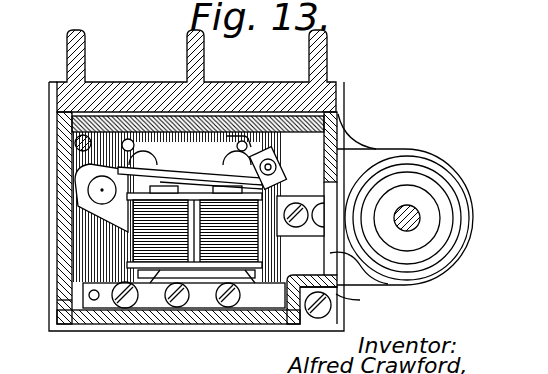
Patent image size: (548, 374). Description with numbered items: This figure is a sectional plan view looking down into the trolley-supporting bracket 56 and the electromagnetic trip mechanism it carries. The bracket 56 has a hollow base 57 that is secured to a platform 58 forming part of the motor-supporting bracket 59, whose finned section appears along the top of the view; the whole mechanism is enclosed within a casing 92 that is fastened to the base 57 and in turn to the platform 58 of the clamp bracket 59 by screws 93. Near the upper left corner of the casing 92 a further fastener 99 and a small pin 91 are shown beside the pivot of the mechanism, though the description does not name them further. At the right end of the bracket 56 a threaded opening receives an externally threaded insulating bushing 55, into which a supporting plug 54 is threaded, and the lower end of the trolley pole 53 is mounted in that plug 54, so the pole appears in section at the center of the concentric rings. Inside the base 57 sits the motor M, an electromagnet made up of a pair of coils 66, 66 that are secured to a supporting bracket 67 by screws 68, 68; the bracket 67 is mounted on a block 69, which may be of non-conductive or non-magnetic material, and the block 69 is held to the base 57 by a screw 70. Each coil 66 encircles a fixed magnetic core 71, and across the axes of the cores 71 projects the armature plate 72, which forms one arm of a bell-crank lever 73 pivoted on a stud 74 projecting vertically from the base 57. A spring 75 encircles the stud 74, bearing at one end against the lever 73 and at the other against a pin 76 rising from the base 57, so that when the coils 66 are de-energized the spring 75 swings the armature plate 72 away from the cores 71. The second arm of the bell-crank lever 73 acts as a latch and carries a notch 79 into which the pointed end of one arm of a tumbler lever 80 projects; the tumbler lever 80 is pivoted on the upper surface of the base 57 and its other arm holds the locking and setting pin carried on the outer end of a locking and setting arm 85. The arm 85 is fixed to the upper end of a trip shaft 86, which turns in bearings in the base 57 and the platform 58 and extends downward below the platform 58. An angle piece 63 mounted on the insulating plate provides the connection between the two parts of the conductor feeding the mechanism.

The platform 58 is at (180, 196).
The motor-supporting bracket 59 is at (148, 82).
The casing 92 is at (62, 301).
The screws 93 is at (320, 316).
The screw 99 is at (80, 143).
The stud 74 is at (406, 207).
The trolley-supporting bracket 56 is at (440, 272).
The insulating bushing 55 is at (403, 165).
The supporting plug 54 is at (414, 173).
The trolley pole 53 is at (414, 211).
The notch 79 is at (359, 268).
The hollow base 57 is at (336, 294).
The locking and setting arm 85 is at (78, 184).
The trip shaft 86 is at (93, 198).
The stop pin 91 is at (124, 148).
The motor M is at (176, 256).
The coils 66 is at (135, 263).
The supporting bracket 67 is at (199, 279).
The armature plate 72 is at (157, 168).
The magnetic core 71 is at (185, 178).
The tumbler lever 80 is at (130, 177).
The spring 75 is at (262, 133).
The pin 76 is at (244, 143).
The bell-crank lever 73 is at (279, 148).
The angle piece 63 is at (311, 197).
The block 69 is at (82, 290).
The screw 70 is at (124, 308).
The screws 68 is at (164, 290).